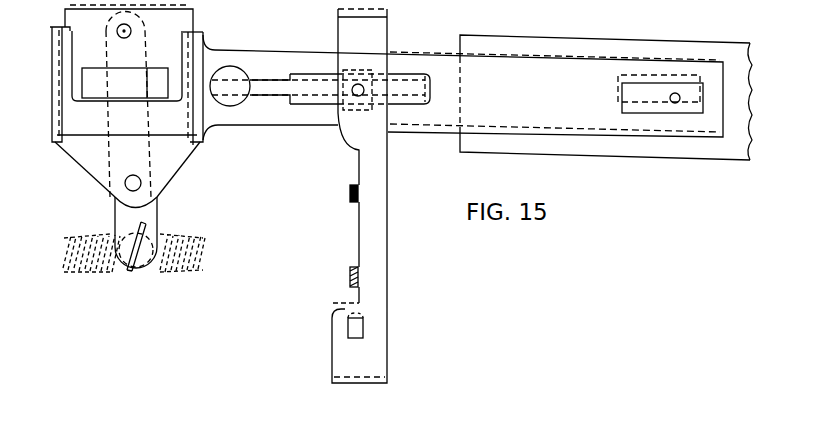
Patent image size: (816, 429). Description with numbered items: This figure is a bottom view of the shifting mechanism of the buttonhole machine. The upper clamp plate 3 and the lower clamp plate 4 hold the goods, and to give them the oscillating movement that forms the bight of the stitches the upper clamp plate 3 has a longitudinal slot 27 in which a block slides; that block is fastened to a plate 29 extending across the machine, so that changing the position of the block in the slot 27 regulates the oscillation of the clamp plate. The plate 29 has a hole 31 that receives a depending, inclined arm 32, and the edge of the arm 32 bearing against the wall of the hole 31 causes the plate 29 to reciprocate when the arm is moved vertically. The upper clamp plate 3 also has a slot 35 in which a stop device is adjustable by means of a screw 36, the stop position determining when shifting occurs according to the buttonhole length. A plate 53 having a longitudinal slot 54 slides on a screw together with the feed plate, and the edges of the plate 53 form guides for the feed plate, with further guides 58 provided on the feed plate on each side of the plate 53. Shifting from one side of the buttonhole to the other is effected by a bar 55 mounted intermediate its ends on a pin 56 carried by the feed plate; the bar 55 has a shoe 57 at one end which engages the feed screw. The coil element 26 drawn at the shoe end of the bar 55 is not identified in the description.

The upper clamp plate 3 is at (405, 60).
The lower clamp plate 4 is at (535, 42).
The coil spring 26 is at (172, 273).
The longitudinal slot 27 is at (360, 90).
The plate 29 is at (380, 232).
The hole 31 is at (363, 328).
The depending inclined arm 32 is at (349, 196).
The slot 35 is at (256, 92).
The screw 36 is at (230, 70).
The plate 53 is at (127, 105).
The longitudinal slot 54 is at (125, 83).
The bar 55 is at (150, 211).
The pin 56 is at (141, 183).
The shoe 57 is at (146, 228).
The guides 58 is at (64, 27).